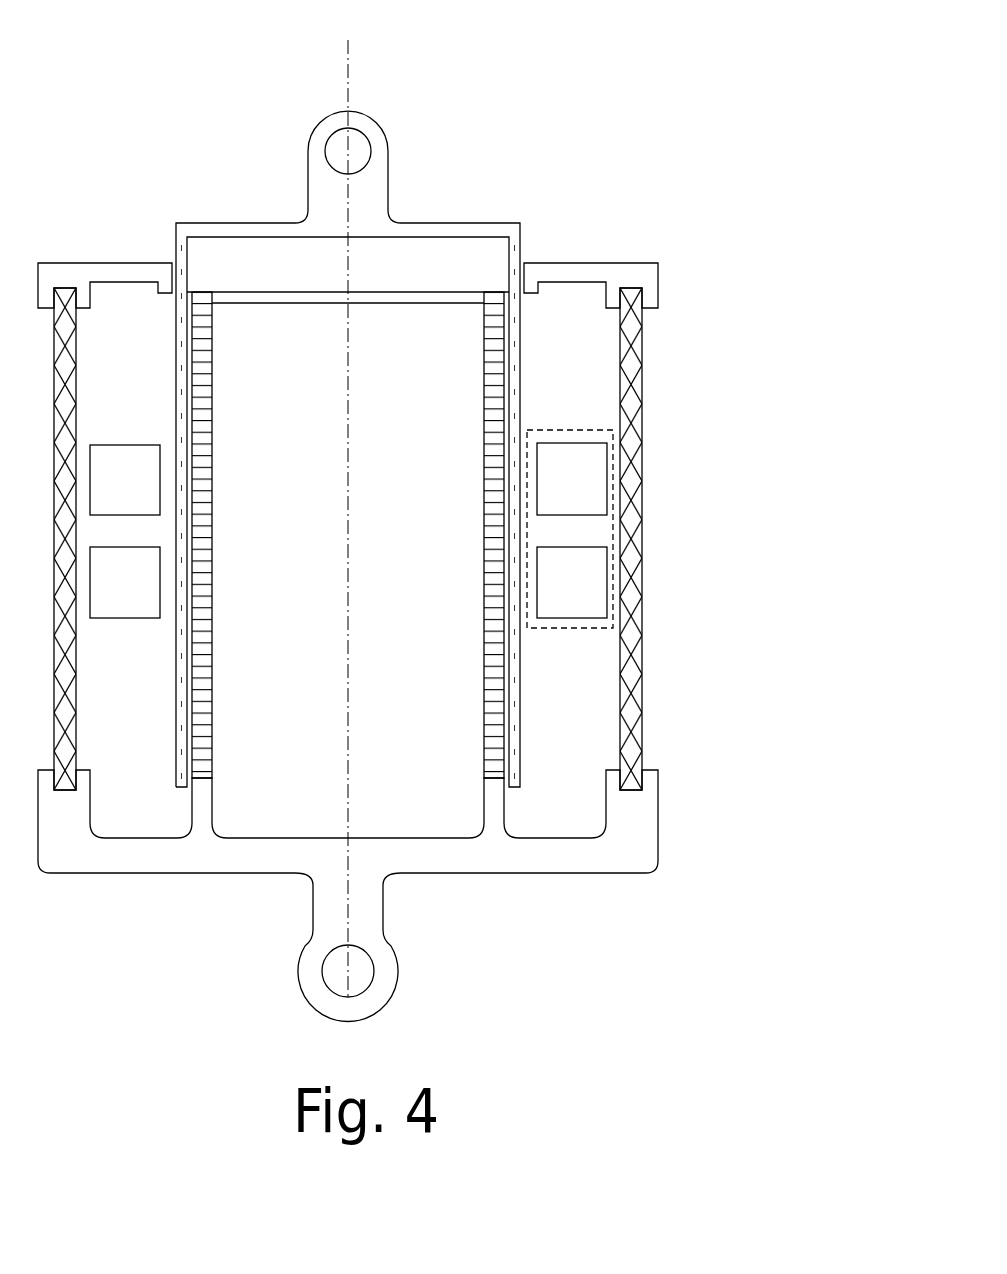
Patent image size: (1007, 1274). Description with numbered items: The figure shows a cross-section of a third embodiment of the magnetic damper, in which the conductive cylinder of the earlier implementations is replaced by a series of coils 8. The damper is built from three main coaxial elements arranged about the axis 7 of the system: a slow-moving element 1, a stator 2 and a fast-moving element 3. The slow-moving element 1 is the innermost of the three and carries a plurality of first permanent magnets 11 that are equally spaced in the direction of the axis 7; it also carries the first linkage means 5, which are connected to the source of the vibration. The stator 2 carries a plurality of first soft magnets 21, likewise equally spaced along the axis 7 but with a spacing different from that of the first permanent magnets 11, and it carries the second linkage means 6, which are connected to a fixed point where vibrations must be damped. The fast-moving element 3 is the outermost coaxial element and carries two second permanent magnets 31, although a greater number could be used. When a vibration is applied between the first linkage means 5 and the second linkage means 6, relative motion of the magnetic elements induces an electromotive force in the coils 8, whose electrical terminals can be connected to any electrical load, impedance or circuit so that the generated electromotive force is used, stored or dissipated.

The slow-moving element 1 is at (348, 669).
The stator 2 is at (440, 414).
The fast-moving element 3 is at (465, 524).
The second permanent magnets 31 is at (624, 460).
The first linkage means 5 is at (415, 990).
The second linkage means 6 is at (404, 124).
The axis 7 is at (371, 51).
The coils 8 is at (655, 557).
The first permanent magnets 11 is at (517, 291).
The first soft magnets 21 is at (538, 354).